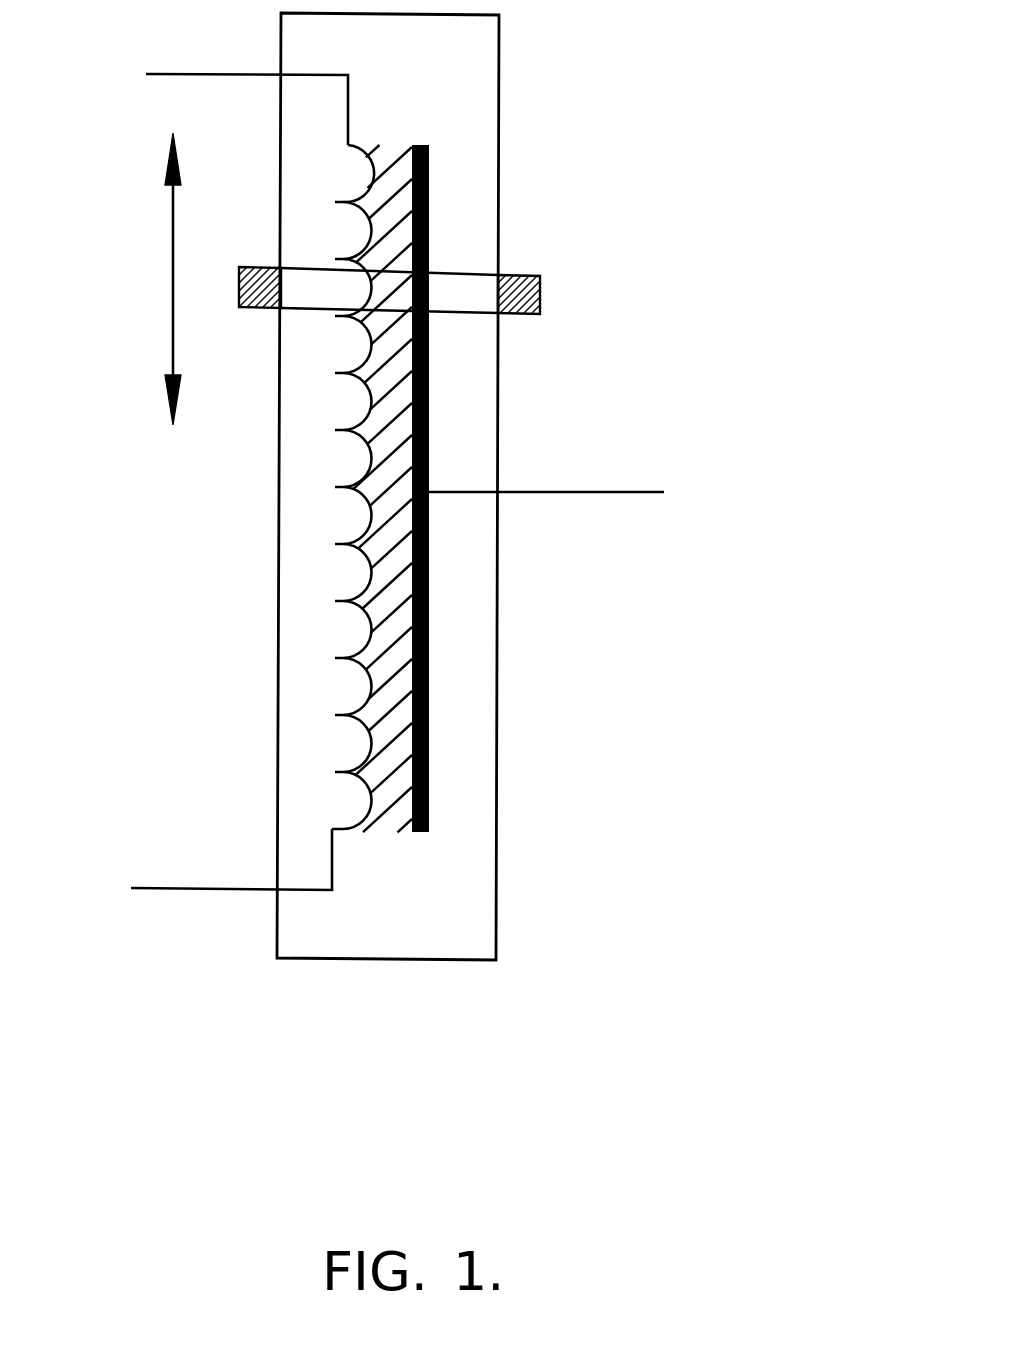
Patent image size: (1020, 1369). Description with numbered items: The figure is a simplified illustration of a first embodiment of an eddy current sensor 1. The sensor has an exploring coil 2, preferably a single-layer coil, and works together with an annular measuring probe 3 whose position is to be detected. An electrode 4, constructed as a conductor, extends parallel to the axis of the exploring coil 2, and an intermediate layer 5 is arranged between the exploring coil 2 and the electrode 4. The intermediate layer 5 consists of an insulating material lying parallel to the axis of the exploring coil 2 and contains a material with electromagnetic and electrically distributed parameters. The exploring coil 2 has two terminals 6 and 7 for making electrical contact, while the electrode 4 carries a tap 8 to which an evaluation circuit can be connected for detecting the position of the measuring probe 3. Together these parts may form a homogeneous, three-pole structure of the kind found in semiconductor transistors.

The eddy current sensor 1 is at (392, 937).
The exploring coil 2 is at (337, 656).
The annular measuring probe 3 is at (560, 296).
The electrode 4 is at (427, 811).
The intermediate layer 5 is at (366, 548).
The terminal 6 is at (188, 875).
The terminal 7 is at (210, 88).
The tap 8 is at (592, 500).